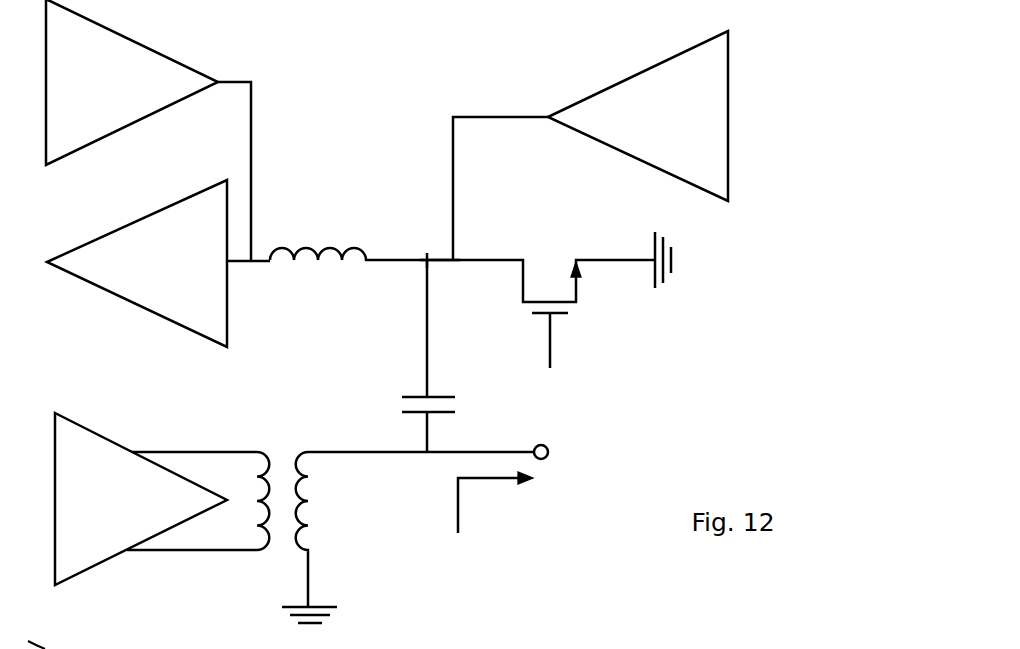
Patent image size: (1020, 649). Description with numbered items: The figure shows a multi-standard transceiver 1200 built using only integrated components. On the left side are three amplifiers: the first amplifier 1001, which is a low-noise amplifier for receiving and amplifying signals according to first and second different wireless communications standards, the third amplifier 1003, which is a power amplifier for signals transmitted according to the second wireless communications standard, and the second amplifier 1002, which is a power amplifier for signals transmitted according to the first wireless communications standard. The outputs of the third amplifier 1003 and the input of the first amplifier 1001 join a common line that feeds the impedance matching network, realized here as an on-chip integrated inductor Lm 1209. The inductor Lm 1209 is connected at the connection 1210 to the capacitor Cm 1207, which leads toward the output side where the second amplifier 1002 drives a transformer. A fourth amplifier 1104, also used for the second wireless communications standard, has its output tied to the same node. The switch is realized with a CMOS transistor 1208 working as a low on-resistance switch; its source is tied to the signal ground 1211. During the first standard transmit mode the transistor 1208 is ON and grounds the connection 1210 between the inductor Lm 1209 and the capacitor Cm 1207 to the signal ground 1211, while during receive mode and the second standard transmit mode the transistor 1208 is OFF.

The multi-standard transceiver 1200 is at (320, 58).
The third amplifier 1003 is at (148, 72).
The first amplifier 1001 is at (113, 273).
The second amplifier 1002 is at (113, 550).
The fourth amplifier 1104 is at (612, 100).
The inductor Lm 1209 is at (300, 275).
The connection 1210 is at (425, 258).
The capacitor Cm 1207 is at (392, 383).
The CMOS transistor 1208 is at (576, 302).
The signal ground 1211 is at (680, 273).